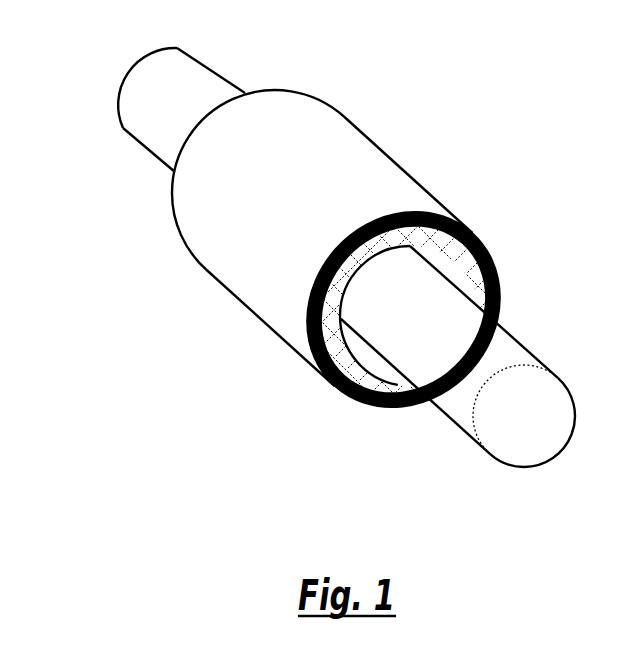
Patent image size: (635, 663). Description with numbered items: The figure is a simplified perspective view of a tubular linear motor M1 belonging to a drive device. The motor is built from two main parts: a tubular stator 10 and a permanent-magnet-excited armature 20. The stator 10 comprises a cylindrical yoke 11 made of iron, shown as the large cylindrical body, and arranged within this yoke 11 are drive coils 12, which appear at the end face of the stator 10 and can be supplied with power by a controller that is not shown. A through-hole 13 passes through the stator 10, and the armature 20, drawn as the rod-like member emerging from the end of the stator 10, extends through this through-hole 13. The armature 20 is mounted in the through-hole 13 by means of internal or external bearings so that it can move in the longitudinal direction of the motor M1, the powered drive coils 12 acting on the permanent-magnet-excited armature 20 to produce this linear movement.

The tubular stator 10 is at (199, 263).
The cylindrical yoke 11 is at (338, 392).
The drive coils 12 is at (492, 262).
The through-hole 13 is at (372, 386).
The permanent-magnet-excited armature 20 is at (524, 349).
The tubular linear motor M1 is at (371, 285).